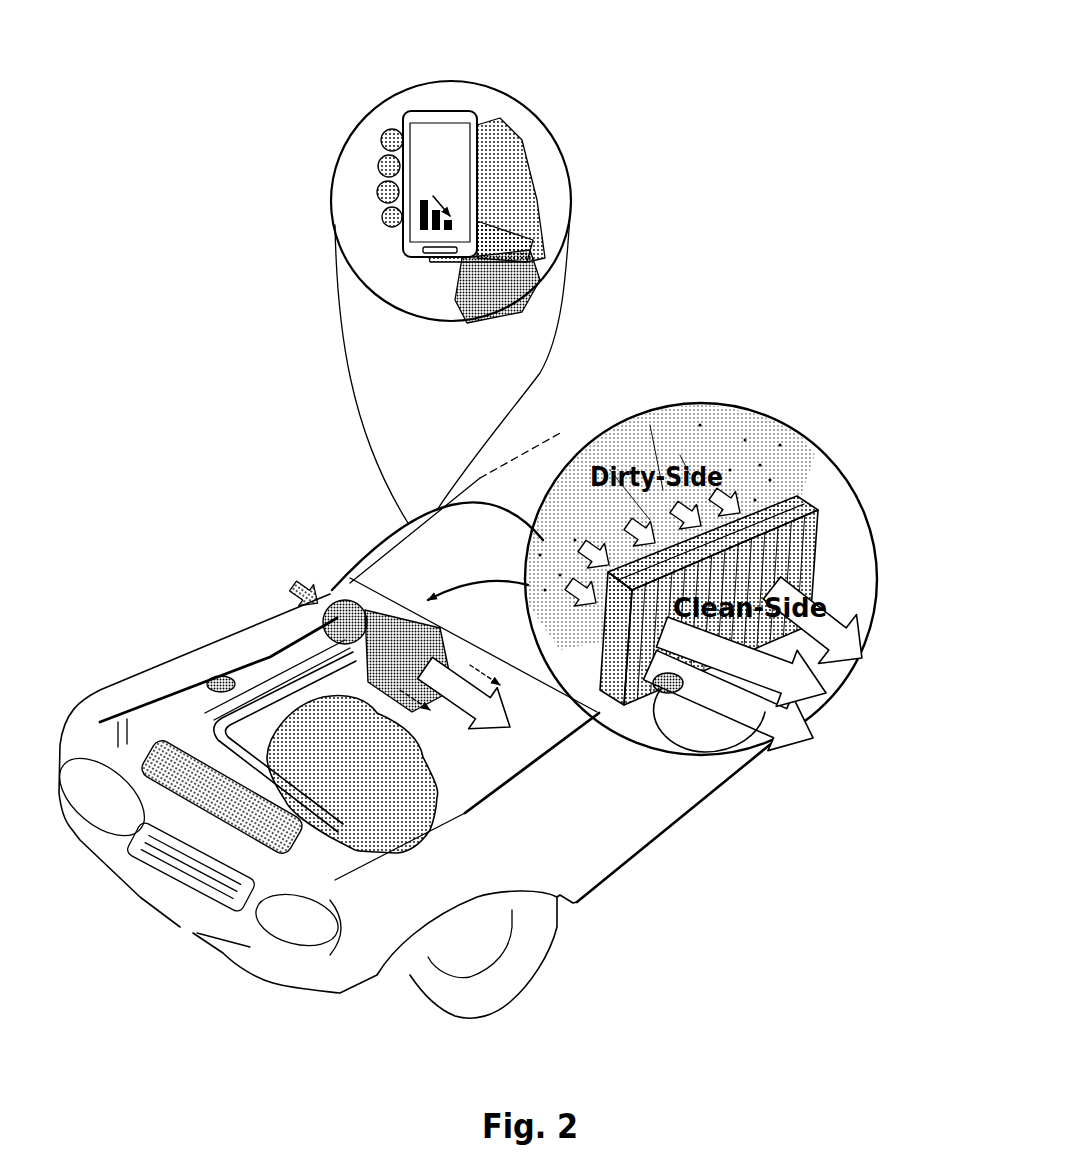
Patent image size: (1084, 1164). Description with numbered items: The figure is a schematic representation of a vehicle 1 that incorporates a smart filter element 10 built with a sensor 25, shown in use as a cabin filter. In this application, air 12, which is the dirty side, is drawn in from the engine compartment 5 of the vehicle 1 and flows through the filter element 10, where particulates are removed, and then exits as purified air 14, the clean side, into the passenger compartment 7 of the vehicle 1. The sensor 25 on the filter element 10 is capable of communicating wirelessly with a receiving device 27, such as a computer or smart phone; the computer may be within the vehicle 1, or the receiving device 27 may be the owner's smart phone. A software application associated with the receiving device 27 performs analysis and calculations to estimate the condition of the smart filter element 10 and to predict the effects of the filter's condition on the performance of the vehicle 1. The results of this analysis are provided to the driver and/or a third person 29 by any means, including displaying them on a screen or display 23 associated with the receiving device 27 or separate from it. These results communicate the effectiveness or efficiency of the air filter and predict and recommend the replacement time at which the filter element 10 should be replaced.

The vehicle 1 is at (332, 526).
The engine compartment 5 is at (247, 747).
The passenger compartment 7 is at (428, 552).
The smart filter element 10 is at (830, 540).
The air 12 is at (290, 585).
The purified air 14 is at (500, 733).
The screen or display 23 is at (420, 187).
The sensor 25 is at (672, 692).
The receiving device 27 is at (370, 132).
The third person 29 is at (495, 222).